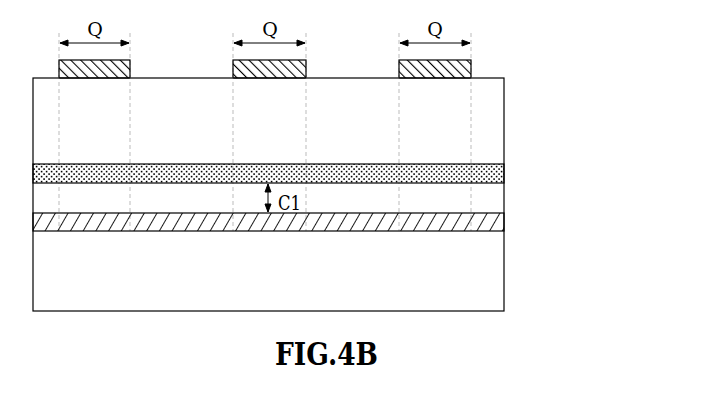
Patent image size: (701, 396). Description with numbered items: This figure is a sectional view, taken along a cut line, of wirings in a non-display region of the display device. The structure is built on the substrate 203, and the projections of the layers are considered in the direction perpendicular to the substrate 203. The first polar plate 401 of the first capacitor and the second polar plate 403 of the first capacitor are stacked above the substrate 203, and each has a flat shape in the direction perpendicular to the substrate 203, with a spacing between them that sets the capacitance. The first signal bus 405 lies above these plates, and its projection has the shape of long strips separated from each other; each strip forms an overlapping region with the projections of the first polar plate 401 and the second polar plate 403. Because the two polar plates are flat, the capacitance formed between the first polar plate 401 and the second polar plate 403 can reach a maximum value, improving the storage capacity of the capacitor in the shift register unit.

The substrate 203 is at (472, 305).
The first polar plate of the first capacitor 401 is at (483, 226).
The second polar plate of the first capacitor 403 is at (483, 176).
The first signal bus 405 is at (458, 60).